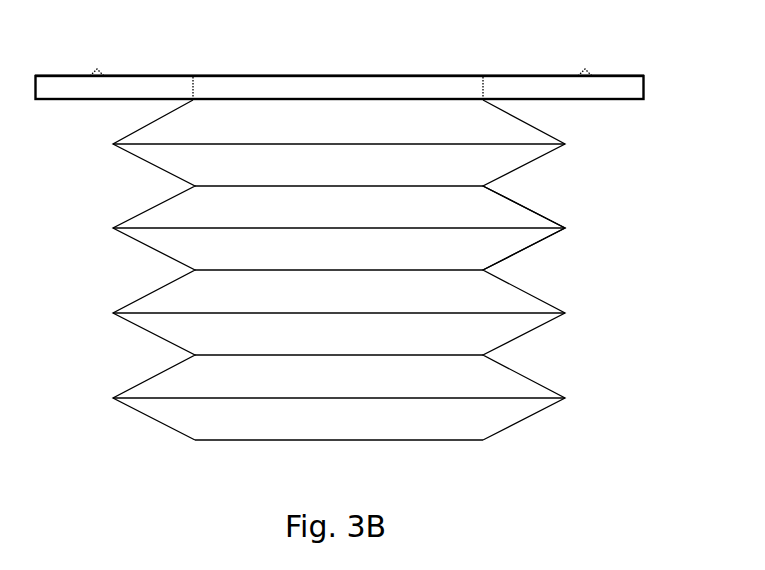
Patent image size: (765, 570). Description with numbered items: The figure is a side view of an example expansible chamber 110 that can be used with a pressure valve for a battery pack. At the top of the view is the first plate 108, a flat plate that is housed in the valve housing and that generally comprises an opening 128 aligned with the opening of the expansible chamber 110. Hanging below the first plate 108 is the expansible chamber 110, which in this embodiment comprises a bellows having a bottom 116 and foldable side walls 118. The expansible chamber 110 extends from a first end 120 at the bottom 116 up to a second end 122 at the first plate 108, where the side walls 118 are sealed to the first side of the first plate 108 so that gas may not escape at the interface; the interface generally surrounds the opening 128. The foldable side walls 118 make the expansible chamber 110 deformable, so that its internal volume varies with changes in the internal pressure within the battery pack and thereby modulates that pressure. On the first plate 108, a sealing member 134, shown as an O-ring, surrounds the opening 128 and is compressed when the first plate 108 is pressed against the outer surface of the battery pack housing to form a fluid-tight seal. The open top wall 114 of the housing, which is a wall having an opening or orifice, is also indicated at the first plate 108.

The first plate 108 is at (628, 89).
The expansible chamber 110 is at (162, 132).
The open top wall 114 is at (513, 75).
The bottom 116 is at (423, 441).
The foldable side walls 118 is at (538, 240).
The first end 120 is at (217, 441).
The second end 122 is at (212, 98).
The opening 128 is at (323, 85).
The sealing member 134 is at (97, 69).